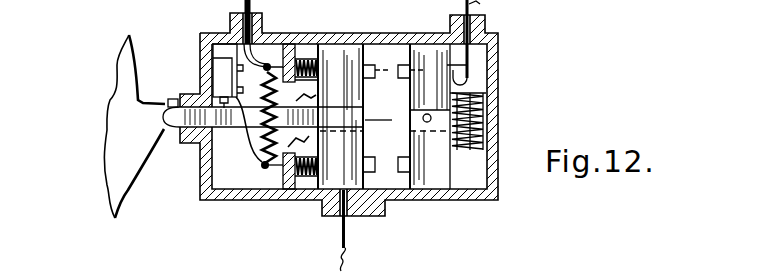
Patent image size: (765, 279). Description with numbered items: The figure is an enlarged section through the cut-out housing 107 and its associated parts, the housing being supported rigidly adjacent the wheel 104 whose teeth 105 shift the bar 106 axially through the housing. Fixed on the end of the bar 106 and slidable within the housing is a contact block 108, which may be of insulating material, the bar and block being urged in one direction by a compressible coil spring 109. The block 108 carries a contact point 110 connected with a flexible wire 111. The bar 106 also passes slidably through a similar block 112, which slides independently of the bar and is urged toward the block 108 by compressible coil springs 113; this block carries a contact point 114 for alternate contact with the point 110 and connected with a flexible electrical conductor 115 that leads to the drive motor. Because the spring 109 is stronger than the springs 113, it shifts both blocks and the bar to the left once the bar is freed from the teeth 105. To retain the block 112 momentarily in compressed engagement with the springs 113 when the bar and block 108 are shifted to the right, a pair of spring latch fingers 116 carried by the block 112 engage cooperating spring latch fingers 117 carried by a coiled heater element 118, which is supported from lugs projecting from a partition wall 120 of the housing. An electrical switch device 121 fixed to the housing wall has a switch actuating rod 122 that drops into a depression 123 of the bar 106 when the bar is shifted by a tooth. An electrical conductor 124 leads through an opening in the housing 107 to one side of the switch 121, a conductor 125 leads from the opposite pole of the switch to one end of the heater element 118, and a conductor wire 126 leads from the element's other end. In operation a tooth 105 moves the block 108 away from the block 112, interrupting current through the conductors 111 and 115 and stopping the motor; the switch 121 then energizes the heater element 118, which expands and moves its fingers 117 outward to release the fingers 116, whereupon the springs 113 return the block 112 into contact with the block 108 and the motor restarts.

The wheel 104 is at (110, 140).
The teeth 105 is at (163, 117).
The bar 106 is at (173, 104).
The housing 107 is at (480, 202).
The contact block 108 is at (440, 178).
The compressible coil spring 109 is at (482, 121).
The contact point 110 is at (402, 60).
The flexible wire 111 is at (469, 67).
The block 112 is at (320, 204).
The compressible coil springs 113 is at (306, 176).
The contact point 114 is at (366, 62).
The flexible electrical conductor 115 is at (349, 249).
The spring latch fingers 116 is at (316, 140).
The spring latch fingers 117 is at (268, 152).
The coiled heater element 118 is at (250, 142).
The partition wall 120 is at (296, 147).
The electrical switch device 121 is at (218, 70).
The switch actuating rod 122 is at (206, 136).
The depression 123 is at (206, 158).
The electrical conductor 124 is at (243, 12).
The conductor 125 is at (201, 189).
The conductor wire 126 is at (286, 36).